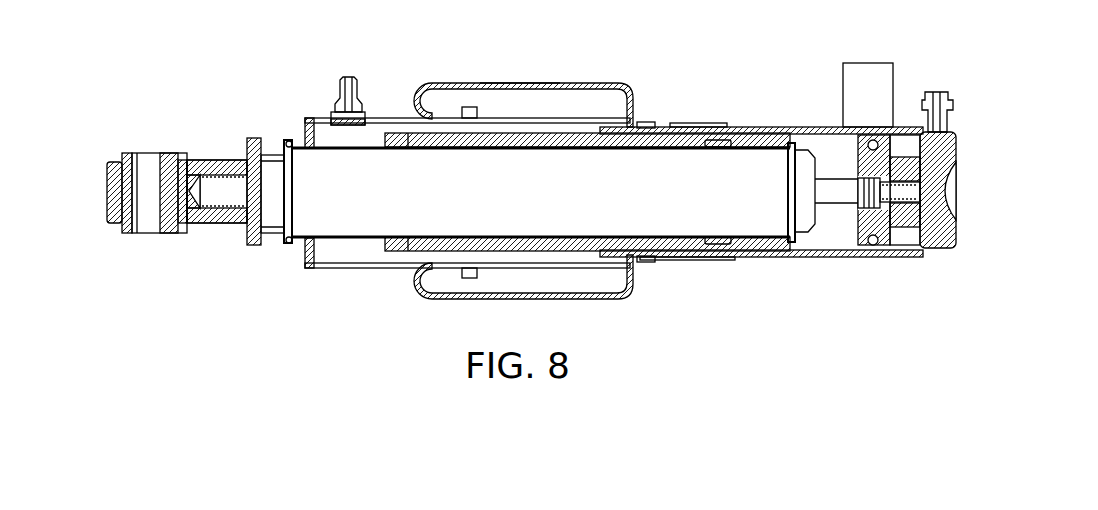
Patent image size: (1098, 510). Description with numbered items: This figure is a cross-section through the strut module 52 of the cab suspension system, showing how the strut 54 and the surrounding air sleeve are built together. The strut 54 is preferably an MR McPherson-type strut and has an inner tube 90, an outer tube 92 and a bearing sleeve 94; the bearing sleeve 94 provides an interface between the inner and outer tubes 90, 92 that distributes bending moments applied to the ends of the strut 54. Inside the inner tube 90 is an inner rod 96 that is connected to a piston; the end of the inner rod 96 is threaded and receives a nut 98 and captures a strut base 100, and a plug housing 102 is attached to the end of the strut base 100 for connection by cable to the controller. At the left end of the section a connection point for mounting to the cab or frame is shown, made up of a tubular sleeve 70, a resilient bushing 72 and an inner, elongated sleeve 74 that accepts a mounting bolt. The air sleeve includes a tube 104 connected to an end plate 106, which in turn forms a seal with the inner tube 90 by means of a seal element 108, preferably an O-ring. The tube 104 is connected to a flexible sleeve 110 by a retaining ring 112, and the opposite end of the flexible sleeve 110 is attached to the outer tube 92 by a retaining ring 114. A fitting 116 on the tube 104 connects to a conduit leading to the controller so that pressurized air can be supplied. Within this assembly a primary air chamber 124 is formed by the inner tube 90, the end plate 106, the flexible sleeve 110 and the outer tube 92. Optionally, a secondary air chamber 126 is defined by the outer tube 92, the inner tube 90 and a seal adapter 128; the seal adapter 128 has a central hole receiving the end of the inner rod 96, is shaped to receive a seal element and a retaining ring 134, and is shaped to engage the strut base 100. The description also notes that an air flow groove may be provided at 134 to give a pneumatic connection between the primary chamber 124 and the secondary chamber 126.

The strut module 52 is at (586, 80).
The strut 54 is at (690, 120).
The tubular sleeve 70 is at (108, 184).
The resilient bushing 72 is at (121, 156).
The inner elongated sleeve 74 is at (133, 152).
The inner tube 90 is at (768, 193).
The outer tube 92 is at (747, 255).
The bearing sleeve 94 is at (562, 240).
The inner rod 96 is at (834, 184).
The nut 98 is at (912, 229).
The strut base 100 is at (888, 243).
The plug housing 102 is at (958, 190).
The tube 104 is at (365, 268).
The end plate 106 is at (258, 246).
The seal element 108 is at (292, 138).
The flexible sleeve 110 is at (628, 302).
The retaining ring 112 is at (459, 282).
The retaining ring 114 is at (647, 263).
The fitting 116 is at (357, 95).
The primary air chamber 124 is at (530, 84).
The secondary air chamber 126 is at (828, 234).
The seal adapter 128 is at (862, 153).
The retaining ring 134 is at (463, 133).